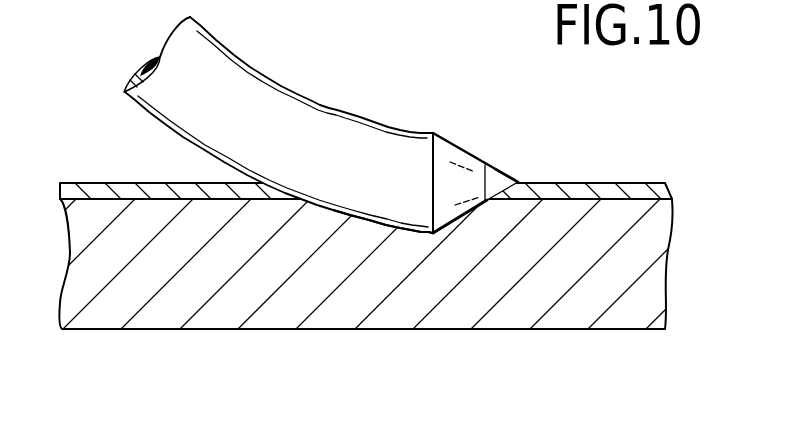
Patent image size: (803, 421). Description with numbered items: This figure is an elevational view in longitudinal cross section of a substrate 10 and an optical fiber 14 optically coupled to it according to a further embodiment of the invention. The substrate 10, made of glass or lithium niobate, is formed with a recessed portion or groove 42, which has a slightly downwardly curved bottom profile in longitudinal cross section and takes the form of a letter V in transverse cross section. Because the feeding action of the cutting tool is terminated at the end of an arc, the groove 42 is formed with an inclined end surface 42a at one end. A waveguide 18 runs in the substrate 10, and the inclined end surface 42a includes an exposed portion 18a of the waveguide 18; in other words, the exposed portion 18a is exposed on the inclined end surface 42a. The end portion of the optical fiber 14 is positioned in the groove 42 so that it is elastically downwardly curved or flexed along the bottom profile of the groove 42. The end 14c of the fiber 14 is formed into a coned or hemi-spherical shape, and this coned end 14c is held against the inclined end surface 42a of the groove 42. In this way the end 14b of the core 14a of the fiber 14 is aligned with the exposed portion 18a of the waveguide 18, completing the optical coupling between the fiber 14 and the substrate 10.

The substrate 10 is at (222, 320).
The waveguide 18 is at (640, 188).
The exposed portion 18a is at (511, 184).
The optical fiber 14 is at (347, 112).
The core 14a is at (160, 56).
The end of the core 14b is at (505, 176).
The coned end 14c is at (463, 143).
The groove 42 is at (377, 227).
The inclined end surface 42a is at (453, 220).